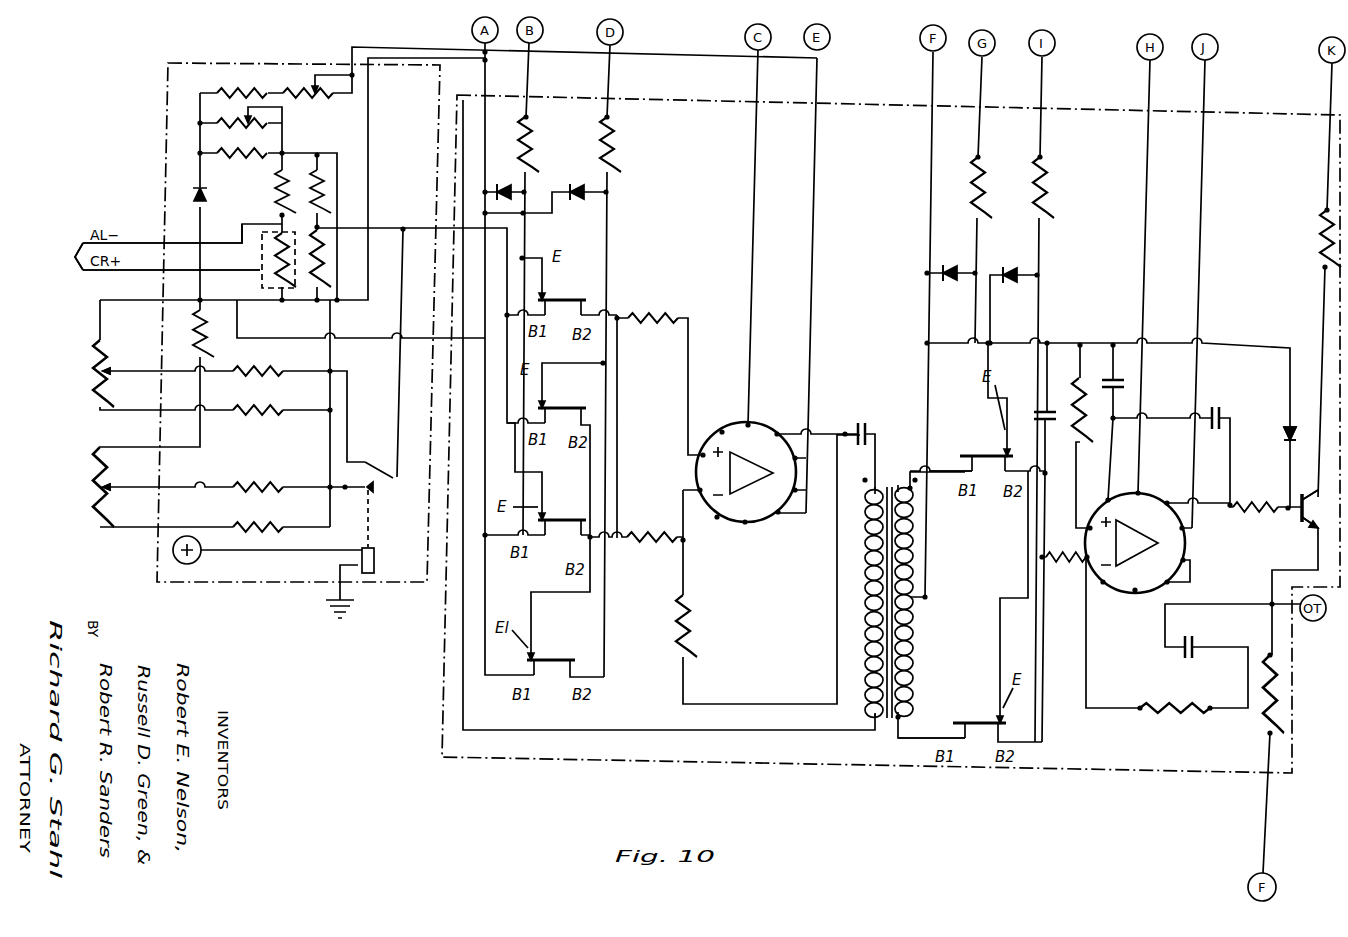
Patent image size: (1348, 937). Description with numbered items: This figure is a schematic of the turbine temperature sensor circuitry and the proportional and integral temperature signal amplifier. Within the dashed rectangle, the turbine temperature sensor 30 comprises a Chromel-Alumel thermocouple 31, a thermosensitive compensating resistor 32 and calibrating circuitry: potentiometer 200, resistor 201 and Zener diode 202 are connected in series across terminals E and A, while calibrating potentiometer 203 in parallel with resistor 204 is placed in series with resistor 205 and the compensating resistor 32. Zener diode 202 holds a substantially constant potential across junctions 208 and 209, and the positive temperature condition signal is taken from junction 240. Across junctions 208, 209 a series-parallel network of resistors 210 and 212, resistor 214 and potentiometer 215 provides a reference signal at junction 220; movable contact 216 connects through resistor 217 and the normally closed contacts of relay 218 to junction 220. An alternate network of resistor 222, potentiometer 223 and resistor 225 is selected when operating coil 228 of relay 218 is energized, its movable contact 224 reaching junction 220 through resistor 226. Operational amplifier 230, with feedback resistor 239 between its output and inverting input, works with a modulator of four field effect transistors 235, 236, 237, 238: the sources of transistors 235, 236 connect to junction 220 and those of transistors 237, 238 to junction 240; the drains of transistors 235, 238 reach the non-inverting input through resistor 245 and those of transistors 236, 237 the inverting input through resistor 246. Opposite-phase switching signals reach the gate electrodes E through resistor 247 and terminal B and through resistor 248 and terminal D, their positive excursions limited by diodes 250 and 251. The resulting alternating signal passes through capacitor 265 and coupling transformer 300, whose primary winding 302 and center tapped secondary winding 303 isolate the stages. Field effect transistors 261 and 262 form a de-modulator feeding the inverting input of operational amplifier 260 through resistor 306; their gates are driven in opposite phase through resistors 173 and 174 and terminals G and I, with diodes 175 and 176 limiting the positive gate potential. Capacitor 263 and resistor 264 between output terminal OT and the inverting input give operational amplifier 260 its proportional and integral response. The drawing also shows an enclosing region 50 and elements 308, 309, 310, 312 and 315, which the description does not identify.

The turbine temperature sensor 30 is at (168, 110).
The thermocouple 31 is at (72, 262).
The compensating resistor 32 is at (268, 290).
The timing and trigger circuit 50 is at (442, 625).
The resistor 173 is at (985, 165).
The resistor 174 is at (1050, 188).
The diode 175 is at (950, 268).
The diode 176 is at (1010, 270).
The potentiometer 200 is at (312, 100).
The resistor 201 is at (217, 90).
The Zener diode 202 is at (278, 185).
The calibrating potentiometer 203 is at (238, 118).
The resistor 204 is at (245, 160).
The resistor 205 is at (268, 205).
The junction 208 is at (322, 152).
The junction 209 is at (258, 268).
The resistor 210 is at (312, 185).
The resistor 212 is at (309, 266).
The resistor 214 is at (268, 416).
The potentiometer 215 is at (110, 389).
The movable contact 216 is at (108, 368).
The resistor 217 is at (258, 378).
The relay 218 is at (370, 458).
The junction 220 is at (293, 247).
The resistor 222 is at (272, 525).
The potentiometer 223 is at (108, 505).
The movable contact 224 is at (108, 482).
The resistor 225 is at (210, 348).
The resistor 226 is at (250, 485).
The operating coil 228 is at (375, 550).
The operational amplifier 230 is at (758, 425).
The field effect transistor 235 is at (568, 298).
The field effect transistor 236 is at (565, 405).
The field effect transistor 237 is at (562, 517).
The field effect transistor 238 is at (555, 657).
The feedback resistor 239 is at (678, 635).
The junction 240 is at (257, 247).
The resistor 245 is at (655, 315).
The resistor 246 is at (650, 545).
The resistor 247 is at (531, 122).
The resistor 248 is at (615, 146).
The diode 250 is at (503, 188).
The diode 251 is at (574, 188).
The operational amplifier 260 is at (1148, 497).
The field effect transistor 261 is at (965, 452).
The field effect transistor 262 is at (998, 715).
The capacitor 263 is at (1197, 640).
The resistor 264 is at (1172, 705).
The capacitor 265 is at (868, 425).
The coupling transformer 300 is at (897, 485).
The primary winding 302 is at (868, 710).
The center tapped secondary winding 303 is at (912, 646).
The resistor 306 is at (1062, 563).
The lead 308 is at (968, 478).
The lead 309 is at (928, 736).
The diode 310 is at (1285, 425).
The transistor 312 is at (1298, 520).
The resistor 315 is at (1266, 715).